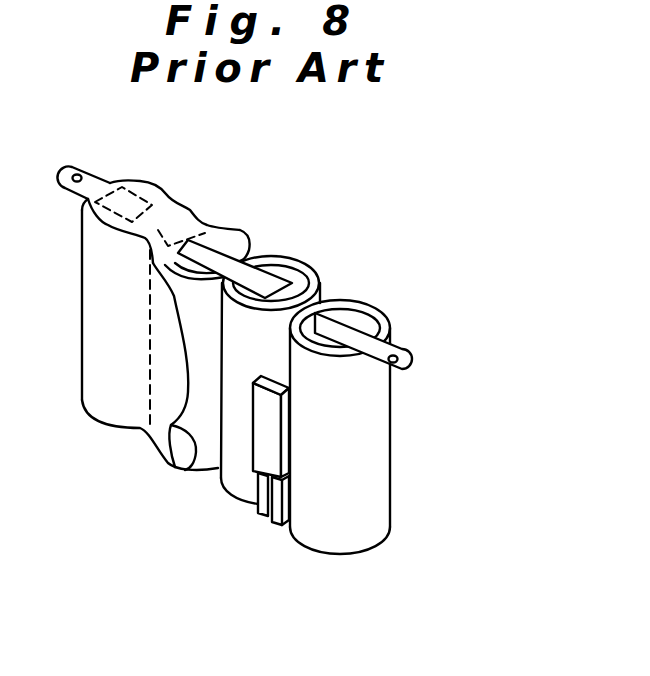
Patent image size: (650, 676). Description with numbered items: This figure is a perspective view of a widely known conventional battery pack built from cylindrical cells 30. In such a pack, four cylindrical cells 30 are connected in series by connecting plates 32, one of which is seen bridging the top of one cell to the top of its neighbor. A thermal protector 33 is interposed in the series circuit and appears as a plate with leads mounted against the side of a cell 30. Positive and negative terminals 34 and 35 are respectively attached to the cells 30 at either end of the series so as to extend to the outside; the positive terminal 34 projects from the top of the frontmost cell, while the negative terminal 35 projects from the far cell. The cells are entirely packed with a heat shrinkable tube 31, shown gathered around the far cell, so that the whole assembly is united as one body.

The cylindrical cell 30 is at (293, 260).
The heat shrinkable tube 31 is at (195, 469).
The connecting plate 32 is at (227, 247).
The thermal protector 33 is at (260, 450).
The positive terminal 34 is at (410, 345).
The negative terminal 35 is at (97, 172).